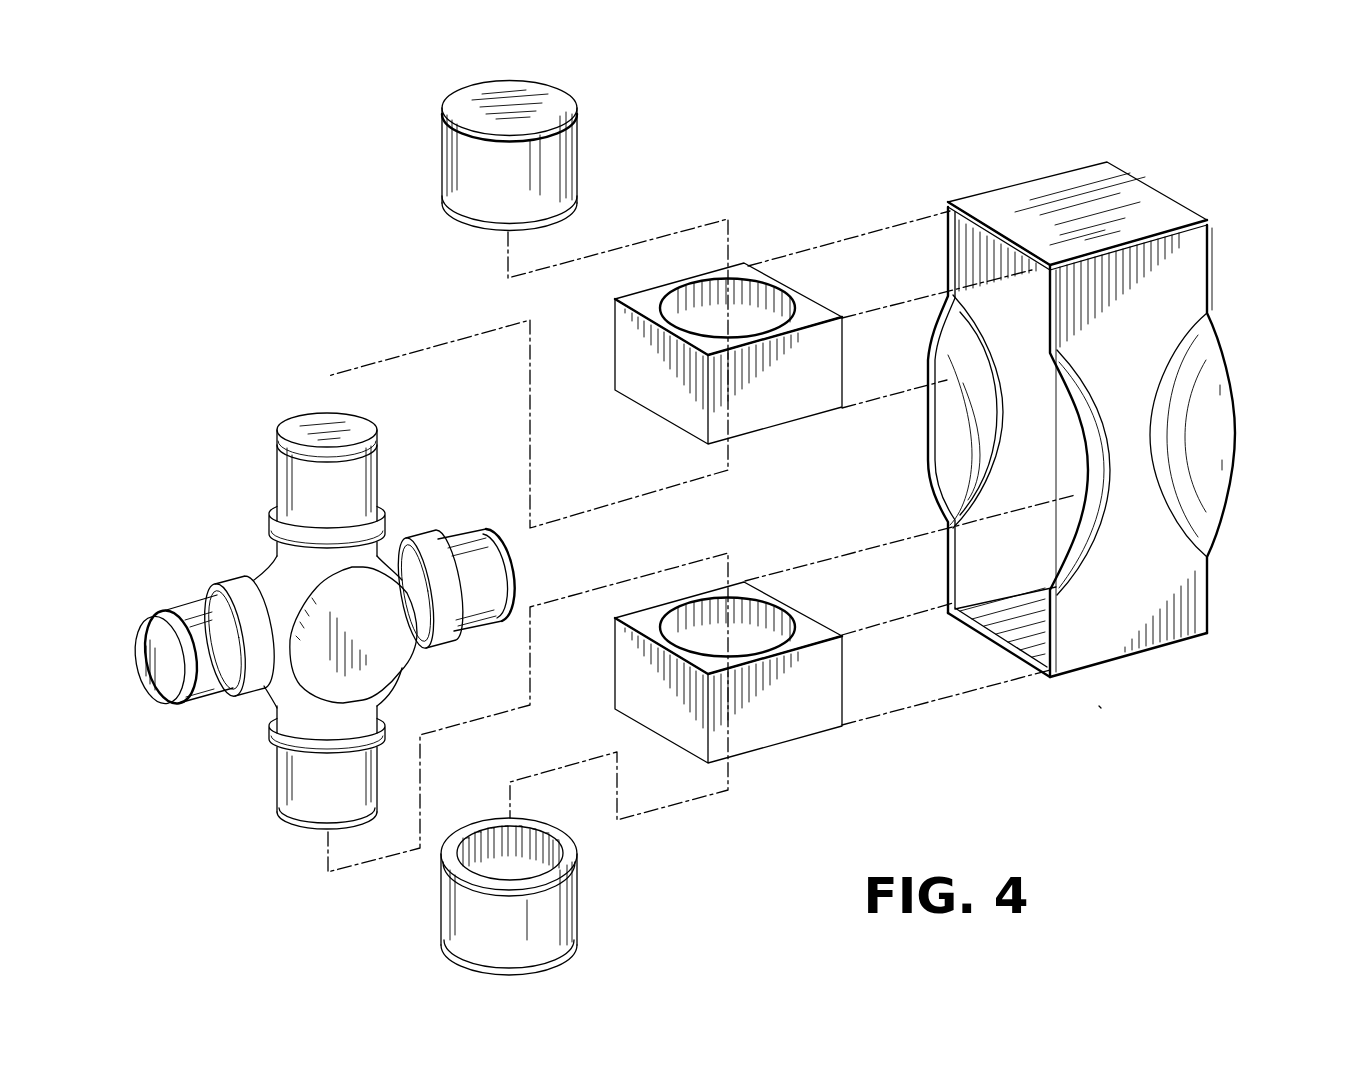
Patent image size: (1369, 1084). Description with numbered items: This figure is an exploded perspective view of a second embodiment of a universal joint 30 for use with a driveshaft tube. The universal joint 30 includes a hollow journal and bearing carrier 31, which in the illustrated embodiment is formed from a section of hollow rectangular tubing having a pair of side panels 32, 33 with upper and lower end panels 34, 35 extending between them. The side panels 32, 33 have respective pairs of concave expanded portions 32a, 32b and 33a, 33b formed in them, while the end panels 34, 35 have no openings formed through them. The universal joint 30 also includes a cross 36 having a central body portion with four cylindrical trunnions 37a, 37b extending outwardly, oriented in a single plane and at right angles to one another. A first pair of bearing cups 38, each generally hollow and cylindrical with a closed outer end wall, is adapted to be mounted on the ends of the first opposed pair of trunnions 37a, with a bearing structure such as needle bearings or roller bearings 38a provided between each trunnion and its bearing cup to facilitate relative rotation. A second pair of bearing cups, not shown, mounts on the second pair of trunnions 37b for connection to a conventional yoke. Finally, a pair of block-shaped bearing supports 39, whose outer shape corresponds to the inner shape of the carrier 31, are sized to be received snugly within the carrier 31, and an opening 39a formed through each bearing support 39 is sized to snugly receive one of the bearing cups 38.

The universal joint 30 is at (325, 228).
The journal and bearing carrier 31 is at (1260, 222).
The side panel 32 is at (1192, 258).
The concave expanded portion 32a is at (1102, 487).
The concave expanded portion 32b is at (1215, 405).
The side panel 33 is at (963, 240).
The concave expanded portion 33a is at (955, 413).
The concave expanded portion 33b is at (1067, 448).
The upper end panel 34 is at (1143, 212).
The lower end panel 35 is at (1023, 633).
The cross 36 is at (323, 669).
The trunnions 37a is at (288, 474).
The trunnions 37b is at (190, 614).
The bearing cups 38 is at (567, 150).
The needle bearings or roller bearings 38a is at (548, 849).
The bearing supports 39 is at (770, 413).
The opening 39a is at (765, 300).